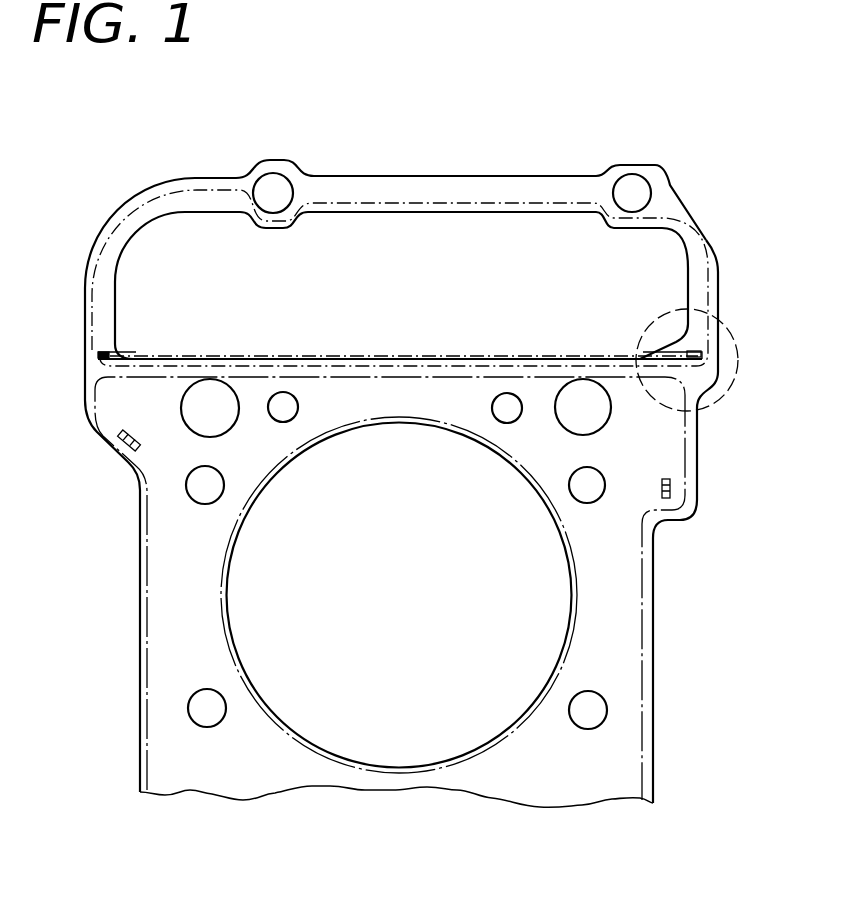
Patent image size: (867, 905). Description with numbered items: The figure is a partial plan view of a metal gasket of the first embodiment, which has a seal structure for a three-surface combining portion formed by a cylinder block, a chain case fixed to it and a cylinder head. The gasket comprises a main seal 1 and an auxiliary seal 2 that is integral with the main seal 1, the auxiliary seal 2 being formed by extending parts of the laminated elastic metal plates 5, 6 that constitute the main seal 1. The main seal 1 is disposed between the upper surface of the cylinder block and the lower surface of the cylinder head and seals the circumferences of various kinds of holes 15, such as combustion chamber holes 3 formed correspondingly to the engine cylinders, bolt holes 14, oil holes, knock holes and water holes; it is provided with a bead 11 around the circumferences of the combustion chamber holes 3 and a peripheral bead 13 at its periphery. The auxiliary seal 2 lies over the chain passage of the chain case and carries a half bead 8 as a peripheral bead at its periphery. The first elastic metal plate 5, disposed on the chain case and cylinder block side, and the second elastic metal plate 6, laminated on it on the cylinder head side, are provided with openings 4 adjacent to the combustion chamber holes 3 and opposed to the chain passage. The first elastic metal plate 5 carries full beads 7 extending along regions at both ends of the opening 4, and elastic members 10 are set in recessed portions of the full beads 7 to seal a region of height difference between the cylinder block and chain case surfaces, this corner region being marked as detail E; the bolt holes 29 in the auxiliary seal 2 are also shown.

The main seal 1 is at (617, 622).
The auxiliary seal 2 is at (498, 187).
The combustion chamber holes 3 is at (310, 450).
The openings 4 is at (458, 212).
The first elastic metal plate 5 is at (713, 233).
The second elastic metal plate 6 is at (707, 324).
The full beads 7 is at (110, 347).
The half bead 8 is at (388, 203).
The elastic members 10 is at (98, 355).
The bead 11 is at (242, 522).
The peripheral bead 13 is at (410, 380).
The bolt holes 14 is at (195, 411).
The various kinds of holes 15 is at (283, 405).
The bolt hole 29 is at (265, 186).
The detail region E is at (732, 388).